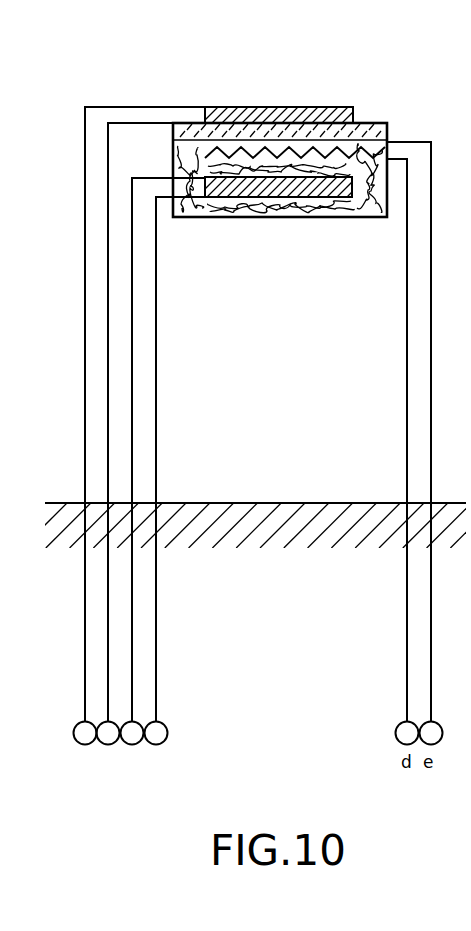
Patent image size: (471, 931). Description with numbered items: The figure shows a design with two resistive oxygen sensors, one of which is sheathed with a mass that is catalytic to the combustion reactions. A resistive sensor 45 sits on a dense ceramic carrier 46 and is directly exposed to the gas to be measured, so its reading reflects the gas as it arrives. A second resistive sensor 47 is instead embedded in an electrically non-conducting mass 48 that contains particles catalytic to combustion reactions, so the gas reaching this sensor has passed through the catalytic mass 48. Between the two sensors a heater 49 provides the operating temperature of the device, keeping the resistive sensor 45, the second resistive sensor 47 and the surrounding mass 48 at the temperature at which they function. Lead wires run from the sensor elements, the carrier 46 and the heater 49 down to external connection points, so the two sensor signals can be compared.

The resistive sensor 45 is at (216, 112).
The dense ceramic carrier 46 is at (197, 131).
The second resistive sensor 47 is at (212, 187).
The electrically non-conducting mass 48 is at (208, 217).
The heater 49 is at (245, 150).